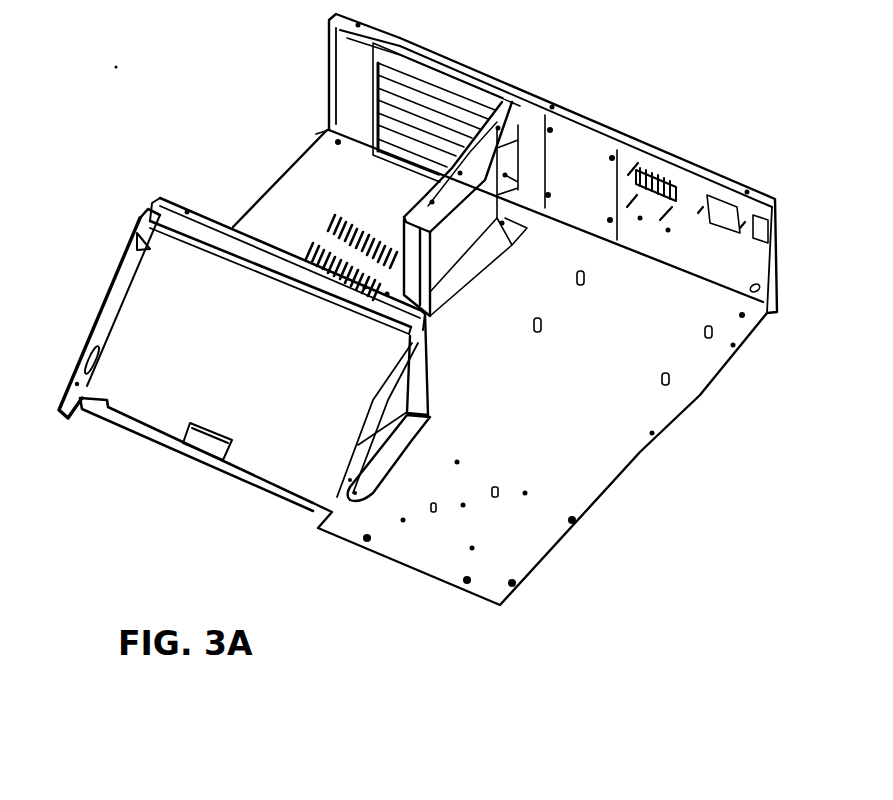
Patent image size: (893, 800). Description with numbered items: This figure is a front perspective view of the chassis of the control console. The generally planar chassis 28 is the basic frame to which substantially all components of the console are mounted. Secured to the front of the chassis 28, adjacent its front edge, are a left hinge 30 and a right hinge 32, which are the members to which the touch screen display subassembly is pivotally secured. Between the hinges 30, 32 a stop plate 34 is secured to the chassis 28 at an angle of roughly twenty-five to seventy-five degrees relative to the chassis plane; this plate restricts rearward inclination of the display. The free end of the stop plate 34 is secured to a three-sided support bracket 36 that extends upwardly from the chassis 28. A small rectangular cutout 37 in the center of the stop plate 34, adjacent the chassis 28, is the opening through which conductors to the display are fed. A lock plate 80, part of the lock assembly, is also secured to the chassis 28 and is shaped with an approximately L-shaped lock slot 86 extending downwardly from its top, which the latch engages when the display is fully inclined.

The chassis 28 is at (610, 396).
The left hinge 30 is at (86, 373).
The right hinge 32 is at (362, 466).
The stop plate 34 is at (227, 324).
The three-sided support bracket 36 is at (427, 358).
The rectangular cutout 37 is at (210, 445).
The lock plate 80 is at (117, 296).
The lock slot 86 is at (135, 241).